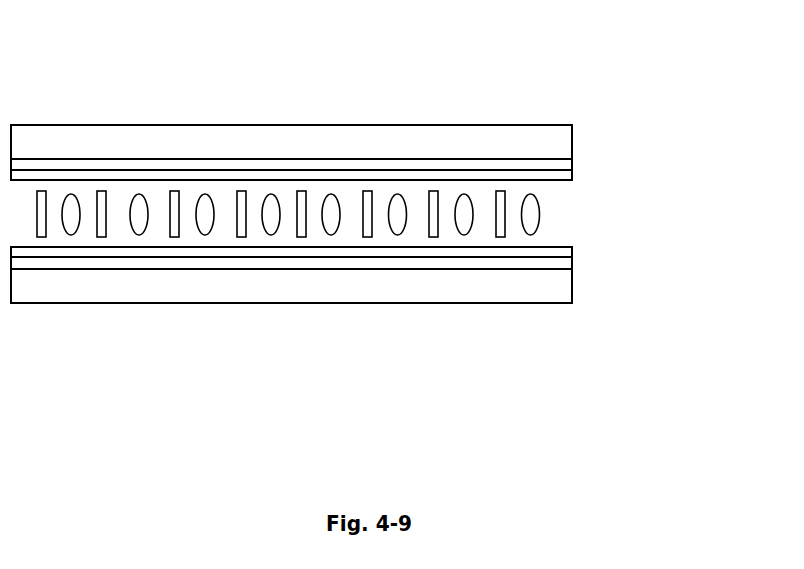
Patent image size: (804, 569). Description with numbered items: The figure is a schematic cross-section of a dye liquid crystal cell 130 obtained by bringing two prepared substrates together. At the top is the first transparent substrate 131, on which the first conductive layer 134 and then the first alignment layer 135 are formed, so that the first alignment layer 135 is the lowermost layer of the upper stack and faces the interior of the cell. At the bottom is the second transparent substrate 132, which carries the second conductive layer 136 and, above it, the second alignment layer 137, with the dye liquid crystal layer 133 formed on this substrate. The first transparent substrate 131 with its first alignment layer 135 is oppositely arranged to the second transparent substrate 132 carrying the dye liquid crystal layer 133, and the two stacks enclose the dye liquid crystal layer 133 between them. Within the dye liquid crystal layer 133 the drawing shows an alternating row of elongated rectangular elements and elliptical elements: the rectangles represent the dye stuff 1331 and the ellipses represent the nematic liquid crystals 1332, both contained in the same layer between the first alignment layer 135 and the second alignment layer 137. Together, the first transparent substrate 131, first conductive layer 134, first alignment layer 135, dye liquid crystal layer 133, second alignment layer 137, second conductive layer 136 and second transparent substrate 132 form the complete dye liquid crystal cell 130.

The dye liquid crystal cell 130 is at (65, 50).
The first transparent substrate 131 is at (590, 142).
The second transparent substrate 132 is at (590, 290).
The dye liquid crystal layer 133 is at (373, 336).
The dye stuff 1331 is at (509, 254).
The nematic liquid crystals 1332 is at (471, 254).
The first conductive layer 134 is at (590, 166).
The first alignment layer 135 is at (590, 185).
The second conductive layer 136 is at (590, 264).
The second alignment layer 137 is at (590, 245).